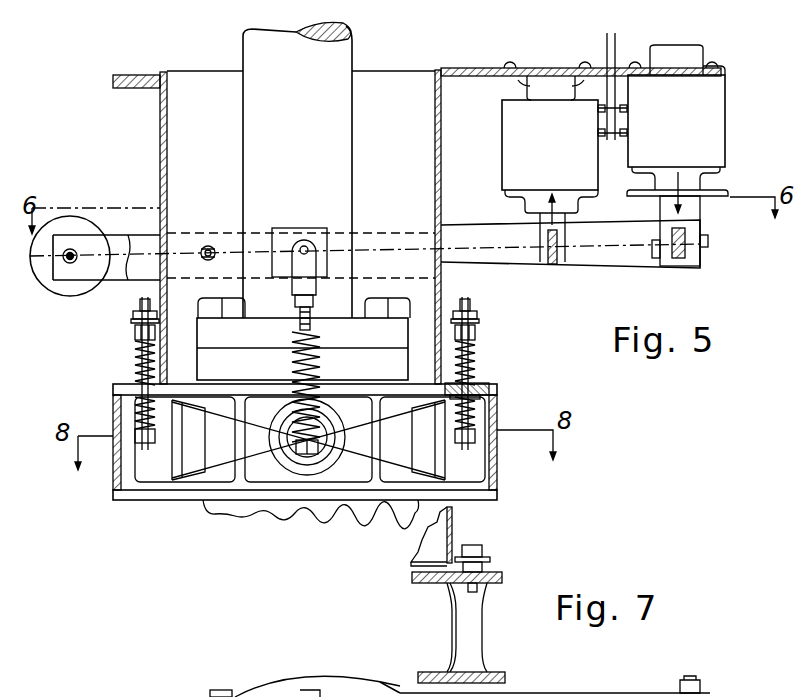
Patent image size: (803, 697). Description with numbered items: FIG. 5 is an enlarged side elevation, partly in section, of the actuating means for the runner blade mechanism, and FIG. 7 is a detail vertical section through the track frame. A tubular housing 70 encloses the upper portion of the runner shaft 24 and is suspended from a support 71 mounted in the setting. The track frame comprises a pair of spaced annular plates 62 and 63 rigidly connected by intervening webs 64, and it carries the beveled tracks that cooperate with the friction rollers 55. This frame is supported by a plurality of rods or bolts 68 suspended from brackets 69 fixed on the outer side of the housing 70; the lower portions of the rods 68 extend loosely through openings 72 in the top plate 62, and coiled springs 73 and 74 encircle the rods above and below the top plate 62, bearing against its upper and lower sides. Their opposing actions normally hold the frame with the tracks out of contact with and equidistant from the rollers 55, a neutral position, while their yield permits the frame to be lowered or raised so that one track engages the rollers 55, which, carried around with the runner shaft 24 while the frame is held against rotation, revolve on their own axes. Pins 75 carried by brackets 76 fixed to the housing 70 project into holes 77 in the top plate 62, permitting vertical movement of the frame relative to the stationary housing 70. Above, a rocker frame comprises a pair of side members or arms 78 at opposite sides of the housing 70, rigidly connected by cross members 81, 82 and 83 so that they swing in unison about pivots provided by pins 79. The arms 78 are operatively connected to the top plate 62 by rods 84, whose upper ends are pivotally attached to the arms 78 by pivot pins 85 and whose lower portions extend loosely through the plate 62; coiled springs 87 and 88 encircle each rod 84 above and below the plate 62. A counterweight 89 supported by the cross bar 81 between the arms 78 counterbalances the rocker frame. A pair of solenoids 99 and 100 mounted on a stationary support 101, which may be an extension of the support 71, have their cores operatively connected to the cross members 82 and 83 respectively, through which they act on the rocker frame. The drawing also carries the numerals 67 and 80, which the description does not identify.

In FIG. 5, the runner shaft 24 is at (228, 516).
In FIG. 5, the friction rollers 55 is at (188, 482).
In FIG. 5, the top plate 62 is at (207, 392).
In FIG. 7, the top plate 62 is at (502, 578).
In FIG. 5, the annular plate 63 is at (462, 500).
In FIG. 7, the annular plate 63 is at (505, 678).
In FIG. 5, the webs 64 is at (300, 492).
In FIG. 7, the webs 64 is at (467, 627).
In FIG. 5, the washer 67 is at (481, 398).
In FIG. 5, the rods or bolts 68 is at (135, 332).
In FIG. 5, the brackets 69 is at (135, 313).
In FIG. 5, the tubular housing 70 is at (441, 186).
In FIG. 7, the tubular housing 70 is at (447, 562).
In FIG. 5, the support 71 is at (492, 76).
In FIG. 5, the openings 72 is at (489, 388).
In FIG. 5, the coiled spring 73 is at (135, 362).
In FIG. 5, the coiled spring 74 is at (135, 420).
In FIG. 7, the pins 75 is at (478, 592).
In FIG. 7, the brackets 76 is at (456, 560).
In FIG. 7, the holes 77 is at (452, 592).
In FIG. 5, the side members or arms 78 is at (490, 242).
In FIG. 7, the side members or arms 78 is at (655, 693).
In FIG. 5, the pins 79 is at (208, 245).
In FIG. 7, the pins 79 is at (210, 694).
In FIG. 7, the cam disc 80 is at (262, 692).
In FIG. 5, the cross member 81 is at (68, 263).
In FIG. 7, the cross member 81 is at (80, 696).
In FIG. 5, the cross member 82 is at (558, 264).
In FIG. 5, the cross member 83 is at (690, 246).
In FIG. 5, the rods 84 is at (313, 312).
In FIG. 5, the pivot pins 85 is at (300, 240).
In FIG. 5, the coiled spring 87 is at (316, 356).
In FIG. 5, the coiled spring 88 is at (318, 400).
In FIG. 5, the counterweight 89 is at (75, 232).
In FIG. 5, the solenoid 99 is at (550, 162).
In FIG. 5, the solenoid 100 is at (677, 129).
In FIG. 5, the stationary support 101 is at (560, 78).